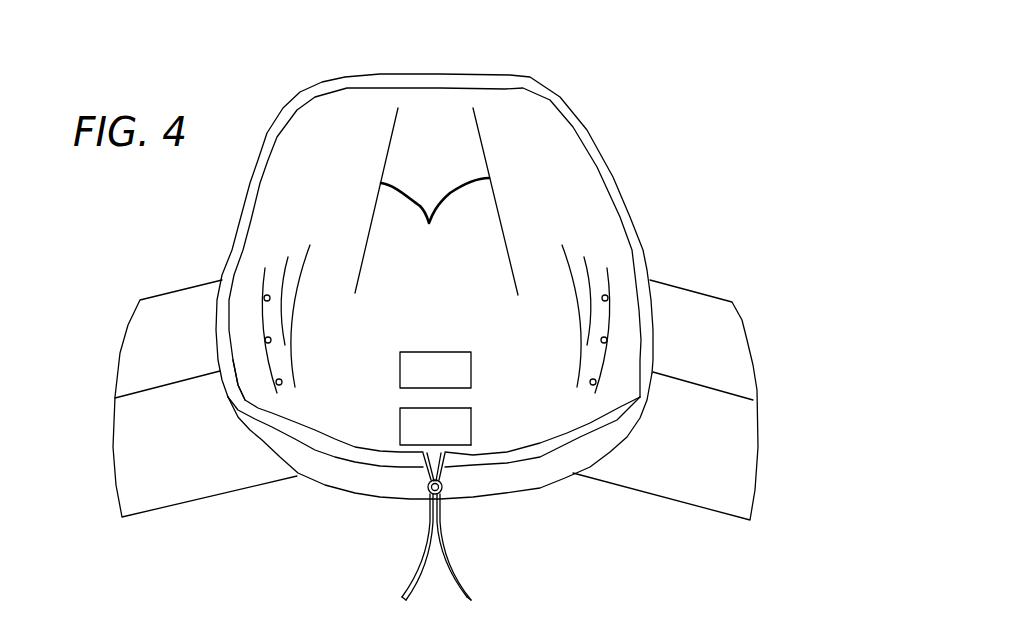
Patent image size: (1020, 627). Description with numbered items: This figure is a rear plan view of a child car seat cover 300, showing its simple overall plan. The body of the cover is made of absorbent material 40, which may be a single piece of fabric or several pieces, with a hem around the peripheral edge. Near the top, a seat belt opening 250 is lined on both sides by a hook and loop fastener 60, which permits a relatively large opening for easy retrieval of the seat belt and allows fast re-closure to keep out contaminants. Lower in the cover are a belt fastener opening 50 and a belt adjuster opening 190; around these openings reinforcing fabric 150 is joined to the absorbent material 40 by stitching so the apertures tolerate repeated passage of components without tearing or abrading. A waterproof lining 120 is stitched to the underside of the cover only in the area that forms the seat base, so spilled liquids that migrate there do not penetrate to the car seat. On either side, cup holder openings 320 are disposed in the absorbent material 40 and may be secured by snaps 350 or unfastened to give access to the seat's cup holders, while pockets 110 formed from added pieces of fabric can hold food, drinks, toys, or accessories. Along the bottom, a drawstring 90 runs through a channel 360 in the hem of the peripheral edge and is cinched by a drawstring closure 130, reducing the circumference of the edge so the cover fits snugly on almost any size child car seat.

The absorbent material 40 is at (568, 150).
The child car seat cover 300 is at (690, 208).
The pockets 110 is at (733, 355).
The channel 360 is at (292, 420).
The hook and loop fastener 60 is at (388, 151).
The seat belt opening 250 is at (435, 218).
The waterproof lining 120 is at (453, 320).
The belt fastener opening 50 is at (472, 368).
The reinforcing fabric 150 is at (400, 408).
The belt adjuster opening 190 is at (471, 428).
The drawstring closure 130 is at (442, 487).
The drawstring 90 is at (428, 527).
The cup holder openings 320 is at (260, 312).
The snaps 350 is at (270, 298).